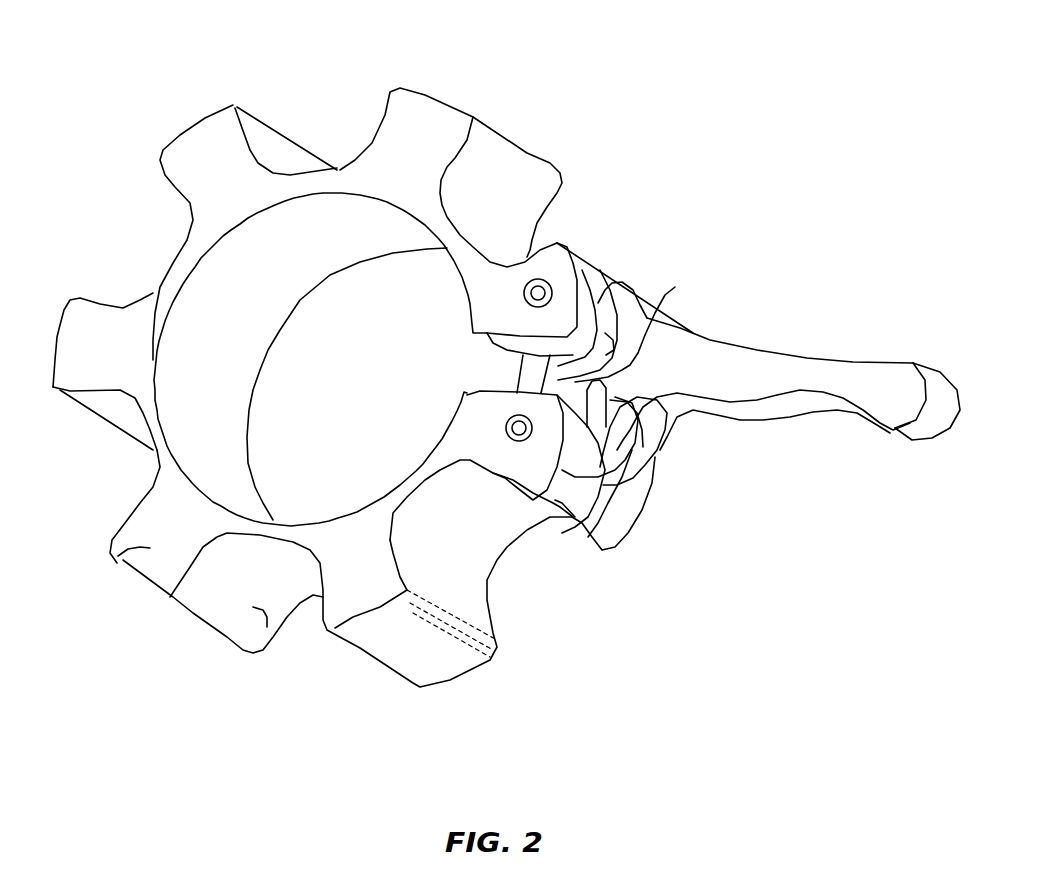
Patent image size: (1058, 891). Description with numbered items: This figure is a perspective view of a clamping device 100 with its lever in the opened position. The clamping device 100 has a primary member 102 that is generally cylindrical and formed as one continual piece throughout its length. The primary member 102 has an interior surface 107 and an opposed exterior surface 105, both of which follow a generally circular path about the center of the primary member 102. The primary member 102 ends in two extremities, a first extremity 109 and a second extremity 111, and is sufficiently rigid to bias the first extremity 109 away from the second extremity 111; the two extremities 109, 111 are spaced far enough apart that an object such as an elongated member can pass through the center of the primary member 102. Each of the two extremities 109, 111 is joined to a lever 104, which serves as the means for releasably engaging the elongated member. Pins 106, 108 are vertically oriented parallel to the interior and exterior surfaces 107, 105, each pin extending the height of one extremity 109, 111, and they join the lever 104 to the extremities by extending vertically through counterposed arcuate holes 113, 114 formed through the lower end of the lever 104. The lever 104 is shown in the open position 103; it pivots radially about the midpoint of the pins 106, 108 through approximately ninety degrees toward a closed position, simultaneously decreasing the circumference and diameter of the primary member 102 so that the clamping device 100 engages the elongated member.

The clamping device 100 is at (310, 337).
The primary member 102 is at (184, 473).
The open position 103 is at (907, 463).
The lever 104 is at (765, 371).
The exterior surface 105 is at (371, 617).
The pin 106 is at (547, 272).
The interior surface 107 is at (293, 359).
The pin 108 is at (512, 442).
The first extremity 109 is at (616, 300).
The second extremity 111 is at (586, 469).
The arcuate hole 113 is at (646, 312).
The arcuate hole 114 is at (665, 441).